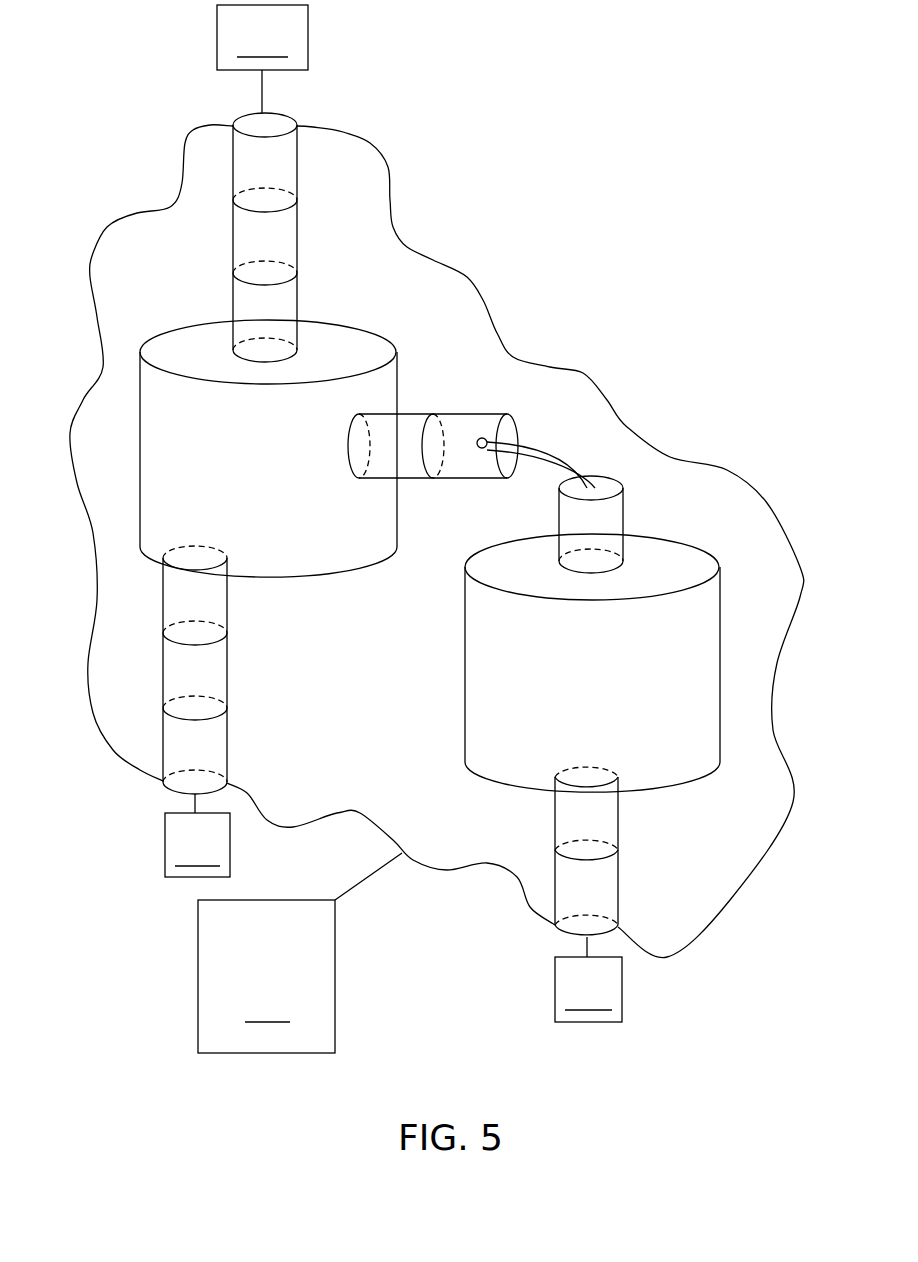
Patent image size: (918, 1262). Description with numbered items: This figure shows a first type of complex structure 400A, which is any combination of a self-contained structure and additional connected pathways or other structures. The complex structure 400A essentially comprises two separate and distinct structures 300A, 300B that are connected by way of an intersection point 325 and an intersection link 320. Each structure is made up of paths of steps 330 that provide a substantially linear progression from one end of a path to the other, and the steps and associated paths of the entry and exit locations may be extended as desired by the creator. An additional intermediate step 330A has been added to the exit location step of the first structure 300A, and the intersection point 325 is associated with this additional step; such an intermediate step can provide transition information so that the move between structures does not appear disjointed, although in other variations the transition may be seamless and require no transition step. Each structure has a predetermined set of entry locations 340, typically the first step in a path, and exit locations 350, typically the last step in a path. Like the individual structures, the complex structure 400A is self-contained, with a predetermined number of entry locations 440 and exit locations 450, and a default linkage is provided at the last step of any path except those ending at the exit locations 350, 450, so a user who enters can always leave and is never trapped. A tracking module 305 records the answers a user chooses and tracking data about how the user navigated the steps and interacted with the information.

The complex structure 400A is at (500, 213).
The entry location 440 is at (262, 59).
The first structure 300A is at (318, 557).
The second structure 300B is at (465, 667).
The step 330 is at (298, 158).
The intermediate step 330A is at (473, 412).
The intersection point 325 is at (490, 414).
The intersection link 320 is at (562, 447).
The entry location 340 is at (604, 489).
The exit location 350 is at (195, 631).
The exit location 450 is at (393, 908).
The tracking module 305 is at (300, 953).